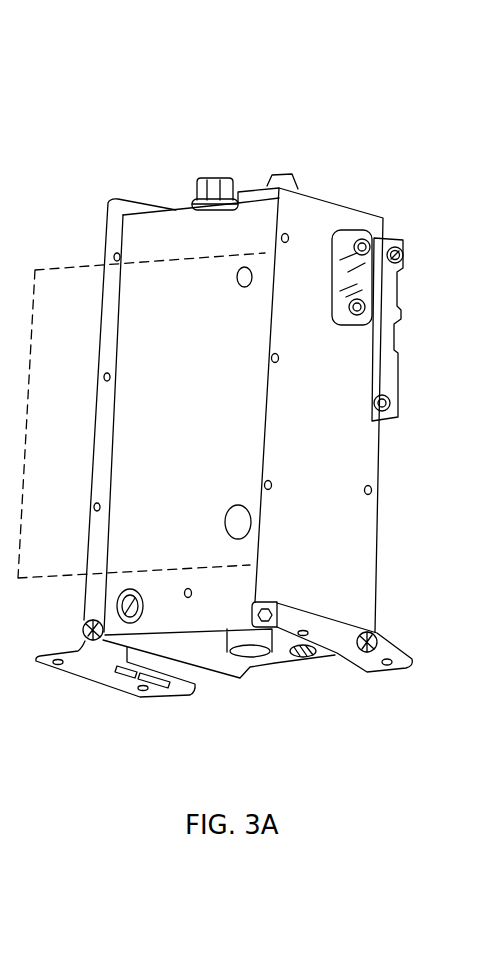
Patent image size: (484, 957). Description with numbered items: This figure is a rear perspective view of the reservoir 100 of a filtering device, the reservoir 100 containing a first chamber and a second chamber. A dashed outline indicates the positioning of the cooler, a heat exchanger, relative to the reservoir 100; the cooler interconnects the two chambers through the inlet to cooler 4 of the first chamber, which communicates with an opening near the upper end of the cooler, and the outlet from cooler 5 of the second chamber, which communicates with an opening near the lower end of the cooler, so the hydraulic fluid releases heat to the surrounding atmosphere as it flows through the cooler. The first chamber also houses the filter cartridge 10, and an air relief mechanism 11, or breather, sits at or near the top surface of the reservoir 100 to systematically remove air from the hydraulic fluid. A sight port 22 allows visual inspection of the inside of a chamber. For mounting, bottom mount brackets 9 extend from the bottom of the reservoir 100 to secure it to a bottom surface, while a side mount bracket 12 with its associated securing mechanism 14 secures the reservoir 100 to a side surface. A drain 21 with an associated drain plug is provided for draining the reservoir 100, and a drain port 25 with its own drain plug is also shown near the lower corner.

The reservoir 100 is at (213, 88).
The air relief mechanism 11 is at (229, 171).
The filter cartridge 10 is at (281, 181).
The inlet to cooler 4 is at (252, 278).
The securing mechanism 14 is at (396, 257).
The sight port 22 is at (357, 284).
The side mount bracket 12 is at (392, 384).
The outlet from cooler 5 is at (243, 519).
The drain port 25 is at (128, 592).
The bottom mount bracket 9 is at (102, 672).
The drain 21 is at (302, 658).